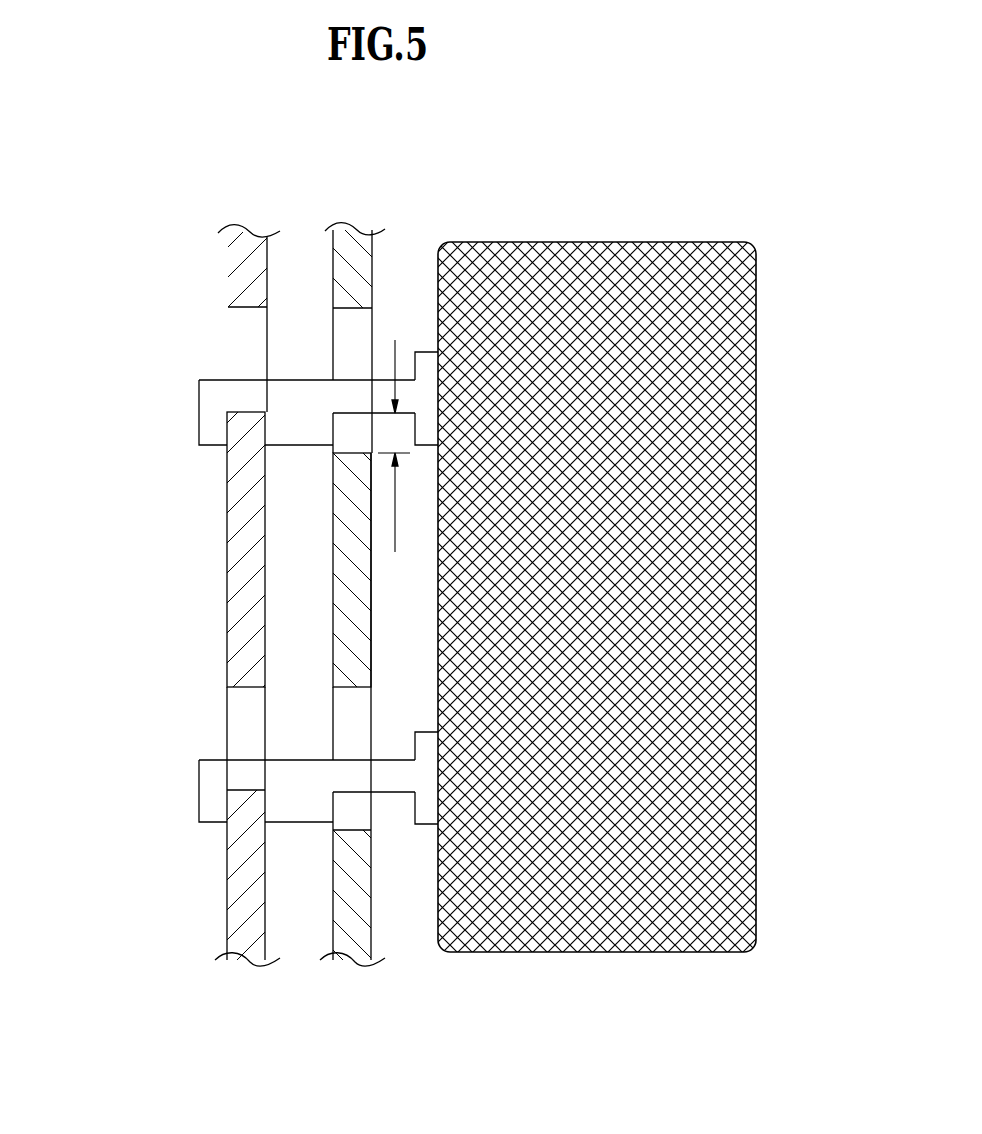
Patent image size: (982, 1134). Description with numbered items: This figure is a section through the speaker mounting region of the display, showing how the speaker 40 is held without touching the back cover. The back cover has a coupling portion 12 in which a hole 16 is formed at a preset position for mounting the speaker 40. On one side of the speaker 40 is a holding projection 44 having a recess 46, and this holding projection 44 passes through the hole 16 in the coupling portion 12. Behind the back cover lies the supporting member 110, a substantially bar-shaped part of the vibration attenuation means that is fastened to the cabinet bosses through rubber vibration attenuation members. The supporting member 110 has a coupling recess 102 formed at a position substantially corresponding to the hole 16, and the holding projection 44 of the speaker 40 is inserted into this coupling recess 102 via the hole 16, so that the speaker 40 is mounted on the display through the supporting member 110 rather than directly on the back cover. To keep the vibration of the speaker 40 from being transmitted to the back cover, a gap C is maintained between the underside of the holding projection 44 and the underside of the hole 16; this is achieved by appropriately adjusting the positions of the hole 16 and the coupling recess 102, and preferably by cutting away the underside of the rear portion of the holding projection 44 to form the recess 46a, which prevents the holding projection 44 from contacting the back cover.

The coupling portion 12 is at (340, 909).
The hole 16 is at (343, 343).
The speaker 40 is at (722, 493).
The holding projection 44 is at (392, 785).
The recess 46 is at (246, 792).
The recess 46a is at (404, 423).
The coupling recess 102 is at (237, 348).
The supporting member 110 is at (246, 268).
The gap C is at (398, 446).